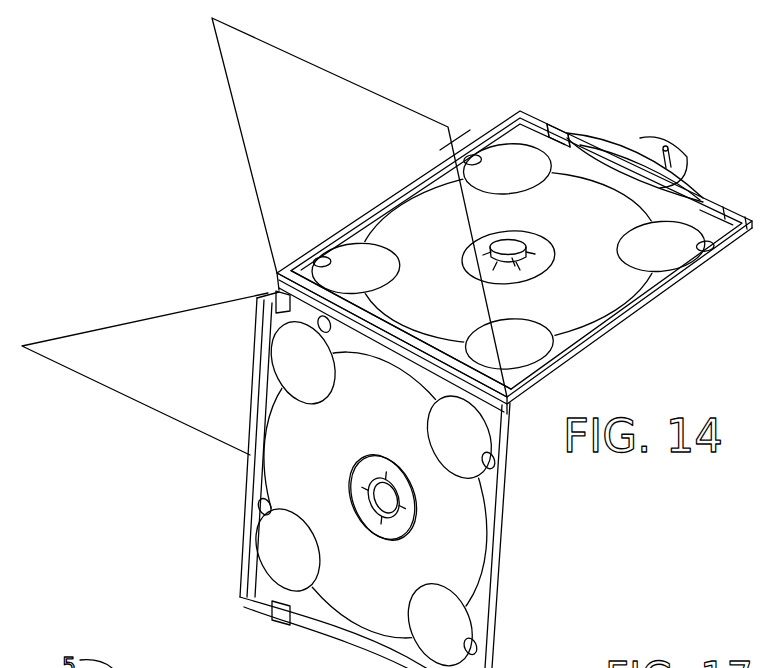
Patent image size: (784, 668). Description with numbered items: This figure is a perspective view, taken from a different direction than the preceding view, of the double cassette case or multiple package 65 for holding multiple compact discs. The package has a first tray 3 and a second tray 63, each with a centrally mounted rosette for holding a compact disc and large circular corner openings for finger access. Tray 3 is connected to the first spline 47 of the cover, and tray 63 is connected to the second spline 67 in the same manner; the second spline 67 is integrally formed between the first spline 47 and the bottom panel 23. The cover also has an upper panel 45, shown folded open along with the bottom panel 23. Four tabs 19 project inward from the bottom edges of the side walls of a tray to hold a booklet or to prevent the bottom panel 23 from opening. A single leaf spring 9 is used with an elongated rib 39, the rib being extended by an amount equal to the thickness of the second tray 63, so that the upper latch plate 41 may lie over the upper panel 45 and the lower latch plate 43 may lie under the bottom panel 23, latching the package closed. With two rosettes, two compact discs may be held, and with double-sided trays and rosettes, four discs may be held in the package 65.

The tray 3 is at (688, 281).
The leaf spring 9 is at (606, 127).
The tabs 19 is at (467, 633).
The bottom panel 23 is at (188, 311).
The rib 39 is at (673, 164).
The upper plate 41 is at (645, 143).
The lower plate 43 is at (660, 168).
The upper panel 45 is at (256, 201).
The first spline 47 is at (391, 323).
The second tray 63 is at (497, 502).
The multiple package 65 is at (493, 87).
The second spline 67 is at (407, 355).